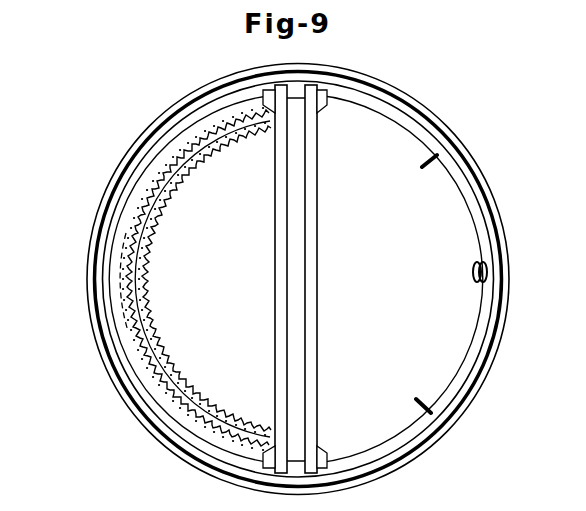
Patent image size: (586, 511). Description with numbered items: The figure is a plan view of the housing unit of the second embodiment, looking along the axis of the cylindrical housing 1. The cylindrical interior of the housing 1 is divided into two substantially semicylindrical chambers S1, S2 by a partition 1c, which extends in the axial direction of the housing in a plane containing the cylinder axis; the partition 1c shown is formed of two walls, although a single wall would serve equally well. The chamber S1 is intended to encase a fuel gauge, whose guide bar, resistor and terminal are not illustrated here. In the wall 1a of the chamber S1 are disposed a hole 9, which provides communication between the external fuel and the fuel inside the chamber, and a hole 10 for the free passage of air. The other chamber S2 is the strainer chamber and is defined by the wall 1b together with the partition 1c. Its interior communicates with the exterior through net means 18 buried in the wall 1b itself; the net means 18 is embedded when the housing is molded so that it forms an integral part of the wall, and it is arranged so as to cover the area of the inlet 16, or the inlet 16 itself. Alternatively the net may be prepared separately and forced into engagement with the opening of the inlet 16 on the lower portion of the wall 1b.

The housing 1 is at (499, 182).
The wall of chamber S1 1a is at (498, 217).
The wall of chamber S2 1b is at (91, 301).
The partition 1c is at (289, 209).
The hole 9 is at (476, 267).
The hole 10 is at (481, 280).
The inlet 16 is at (128, 260).
The net means 18 is at (208, 426).
The chamber S1 is at (378, 312).
The chamber S2 is at (212, 312).